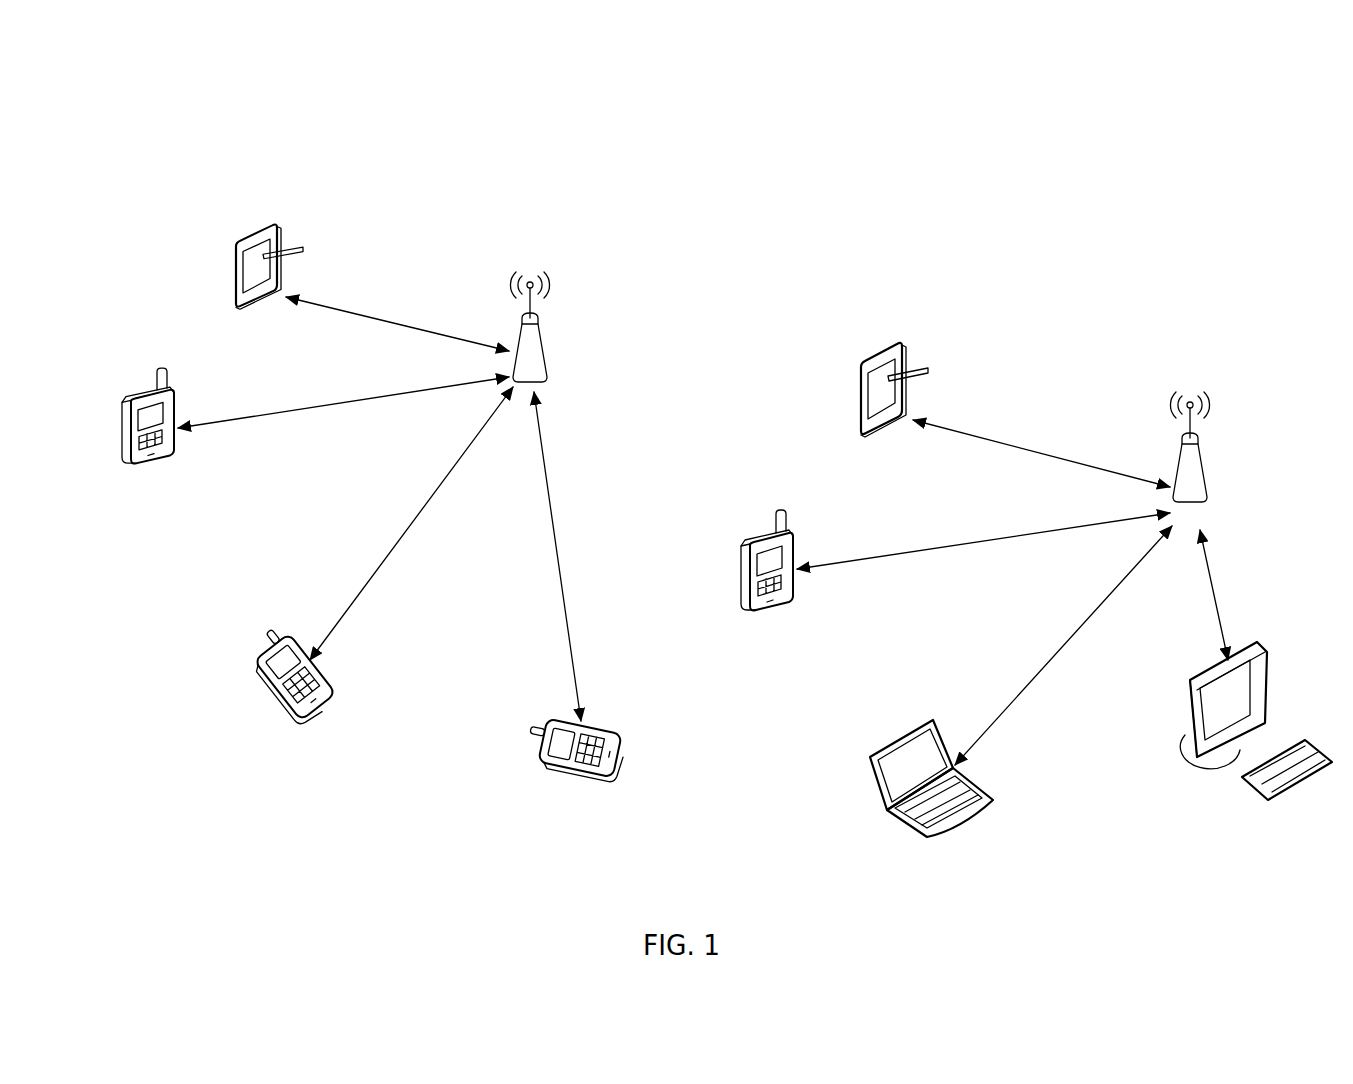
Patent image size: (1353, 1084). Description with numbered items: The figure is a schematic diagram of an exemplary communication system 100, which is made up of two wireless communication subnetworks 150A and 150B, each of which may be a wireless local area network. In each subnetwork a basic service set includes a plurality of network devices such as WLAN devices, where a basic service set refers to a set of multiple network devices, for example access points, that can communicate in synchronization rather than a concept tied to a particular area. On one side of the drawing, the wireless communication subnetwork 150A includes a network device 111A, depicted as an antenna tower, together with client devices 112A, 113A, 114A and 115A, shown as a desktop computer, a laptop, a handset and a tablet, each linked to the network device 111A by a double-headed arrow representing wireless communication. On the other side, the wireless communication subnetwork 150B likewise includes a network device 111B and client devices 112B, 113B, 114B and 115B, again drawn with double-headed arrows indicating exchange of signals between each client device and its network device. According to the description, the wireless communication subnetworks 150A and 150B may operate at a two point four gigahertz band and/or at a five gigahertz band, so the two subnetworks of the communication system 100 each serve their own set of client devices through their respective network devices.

The communication system 100 is at (781, 106).
The wireless communication subnetwork 150A is at (1004, 250).
The wireless communication subnetwork 150B is at (388, 210).
The network device 111A is at (1182, 446).
The network device 111B is at (522, 320).
The client device 112A is at (1256, 640).
The client device 112B is at (580, 775).
The client device 113A is at (868, 755).
The client device 113B is at (277, 700).
The client device 114A is at (740, 562).
The client device 114B is at (128, 430).
The client device 115A is at (855, 425).
The client device 115B is at (233, 298).